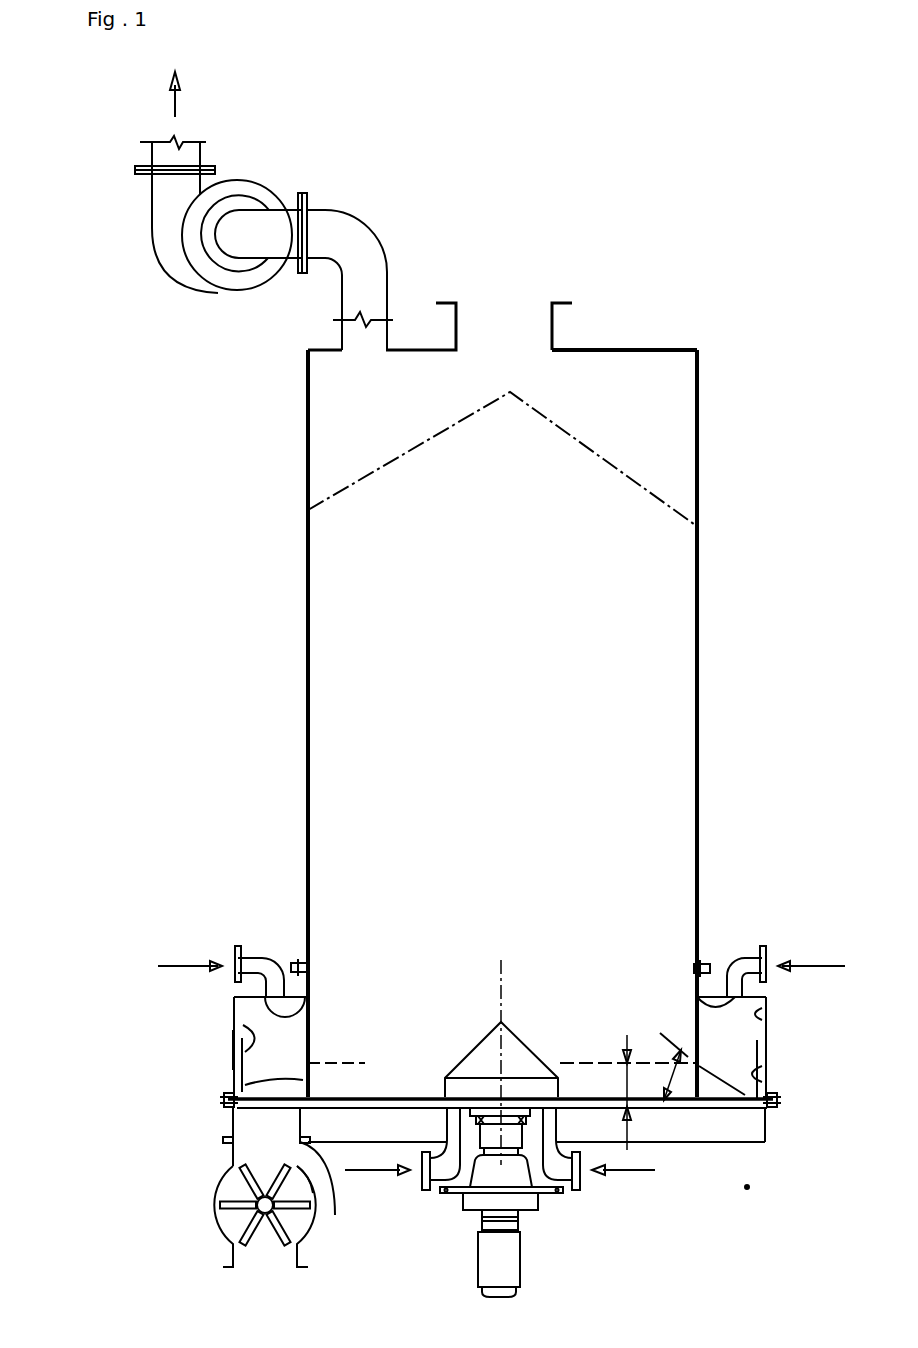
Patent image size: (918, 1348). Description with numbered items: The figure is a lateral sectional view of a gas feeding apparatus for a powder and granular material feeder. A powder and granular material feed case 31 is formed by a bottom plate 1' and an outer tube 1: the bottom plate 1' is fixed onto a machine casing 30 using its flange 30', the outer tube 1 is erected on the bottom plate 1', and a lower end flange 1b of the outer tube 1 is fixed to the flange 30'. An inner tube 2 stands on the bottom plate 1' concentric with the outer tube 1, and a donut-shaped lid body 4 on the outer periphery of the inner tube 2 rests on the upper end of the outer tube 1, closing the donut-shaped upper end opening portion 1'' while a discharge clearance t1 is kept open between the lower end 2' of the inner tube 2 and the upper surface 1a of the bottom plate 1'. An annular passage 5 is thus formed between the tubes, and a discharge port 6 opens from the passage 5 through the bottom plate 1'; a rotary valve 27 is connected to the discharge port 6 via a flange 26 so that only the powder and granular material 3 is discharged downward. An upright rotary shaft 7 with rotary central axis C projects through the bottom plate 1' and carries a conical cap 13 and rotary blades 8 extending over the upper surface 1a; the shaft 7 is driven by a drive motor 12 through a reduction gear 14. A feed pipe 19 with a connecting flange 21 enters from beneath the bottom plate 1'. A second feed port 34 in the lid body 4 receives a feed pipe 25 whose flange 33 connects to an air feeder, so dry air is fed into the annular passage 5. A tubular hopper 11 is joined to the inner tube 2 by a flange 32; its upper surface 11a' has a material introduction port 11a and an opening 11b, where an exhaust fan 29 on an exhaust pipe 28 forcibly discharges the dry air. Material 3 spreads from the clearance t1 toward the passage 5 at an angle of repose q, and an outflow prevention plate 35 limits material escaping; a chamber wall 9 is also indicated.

The outer tube 1 is at (791, 1067).
The bottom plate 1' is at (660, 1175).
The donut-shaped upper end opening portion 1'' is at (804, 1013).
The upper surface of the bottom plate 1a is at (350, 1103).
The lower end flange 1b is at (778, 1102).
The inner tube 2 is at (671, 1001).
The lower end of the inner tube 2' is at (628, 1015).
The powder and granular material 3 is at (577, 433).
The donut-shaped lid body 4 is at (283, 994).
The annular passage 5 is at (286, 1069).
The discharge port 6 is at (258, 1125).
The upright rotary shaft 7 is at (513, 1107).
The rotary blades 8 is at (398, 1097).
The chamber wall 9 is at (242, 1038).
The tubular hopper 11 is at (699, 633).
The powder and granular material introduction port 11a is at (576, 300).
The upper surface of the tubular hopper 11a' is at (629, 324).
The opening 11b is at (383, 348).
The drive motor 12 is at (513, 1262).
The conical cap 13 is at (477, 1047).
The reduction gear 14 is at (487, 1170).
The feed pipe 19 is at (450, 1123).
The connecting flange 21 is at (418, 1185).
The feed pipe 25 is at (255, 955).
The flange 26 is at (326, 1199).
The rotary valve 27 is at (232, 1223).
The exhaust pipe 28 is at (358, 237).
The exhaust fan 29 is at (245, 185).
The machine casing 30 is at (805, 1157).
The flange of the machine casing 30' is at (794, 1132).
The powder and granular material feed case 31 is at (226, 1050).
The flange 32 is at (708, 963).
The flange 33 is at (235, 956).
The second feed port 34 is at (307, 1010).
The powder and granular material outflow prevention plate 35 is at (238, 1080).
The rotary central axis C is at (505, 980).
The discharge clearance t1 is at (621, 1063).
The angle of repose q is at (668, 1110).